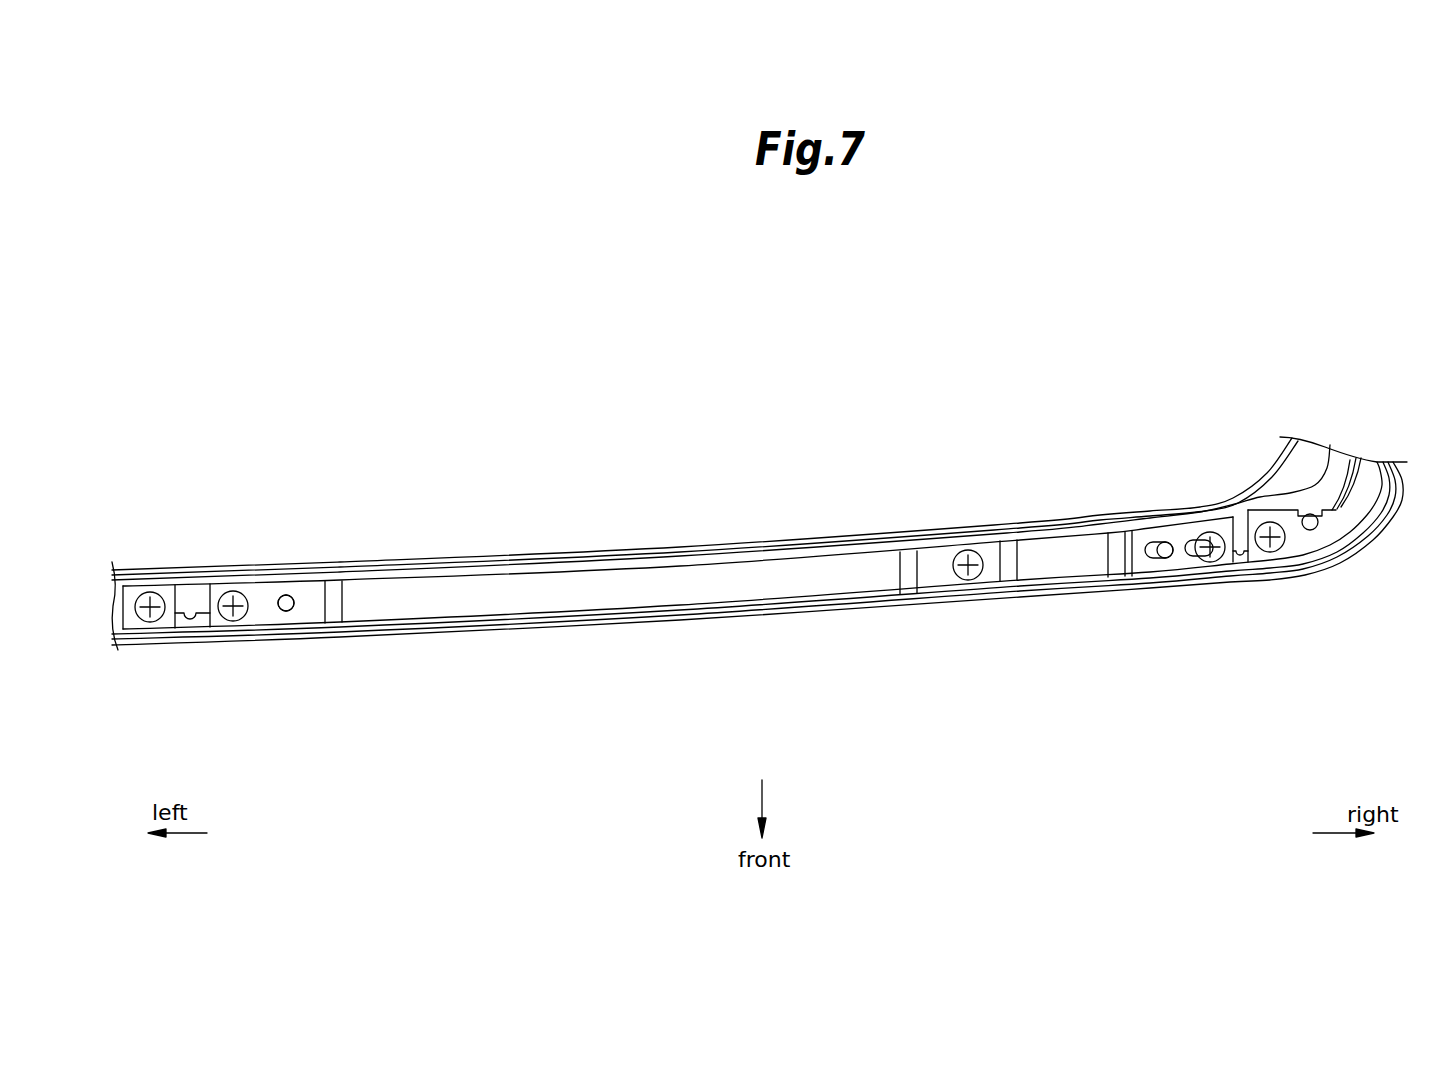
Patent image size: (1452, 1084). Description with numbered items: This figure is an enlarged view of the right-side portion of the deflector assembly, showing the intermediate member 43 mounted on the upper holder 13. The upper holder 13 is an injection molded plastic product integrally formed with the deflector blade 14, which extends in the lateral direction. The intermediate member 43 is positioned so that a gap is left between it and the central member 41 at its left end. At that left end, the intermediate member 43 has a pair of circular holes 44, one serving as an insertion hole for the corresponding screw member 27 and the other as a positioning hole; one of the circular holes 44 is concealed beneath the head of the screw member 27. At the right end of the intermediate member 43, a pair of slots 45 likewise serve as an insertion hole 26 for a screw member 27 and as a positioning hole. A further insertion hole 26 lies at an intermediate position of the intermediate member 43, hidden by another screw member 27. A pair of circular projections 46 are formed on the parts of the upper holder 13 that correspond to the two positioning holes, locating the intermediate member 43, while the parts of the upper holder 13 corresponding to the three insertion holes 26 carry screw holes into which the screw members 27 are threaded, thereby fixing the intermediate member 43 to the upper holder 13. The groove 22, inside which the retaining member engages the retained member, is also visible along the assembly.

The upper holder 13 is at (540, 548).
The deflector blade 14 is at (807, 548).
The groove 22 is at (198, 610).
The insertion hole 26 is at (1192, 560).
The screw member 27 is at (148, 621).
The central member 41 is at (128, 618).
The intermediate member 43 is at (643, 588).
The circular hole 44 is at (285, 609).
The slot 45 is at (1158, 558).
The circular projection 46 is at (287, 597).